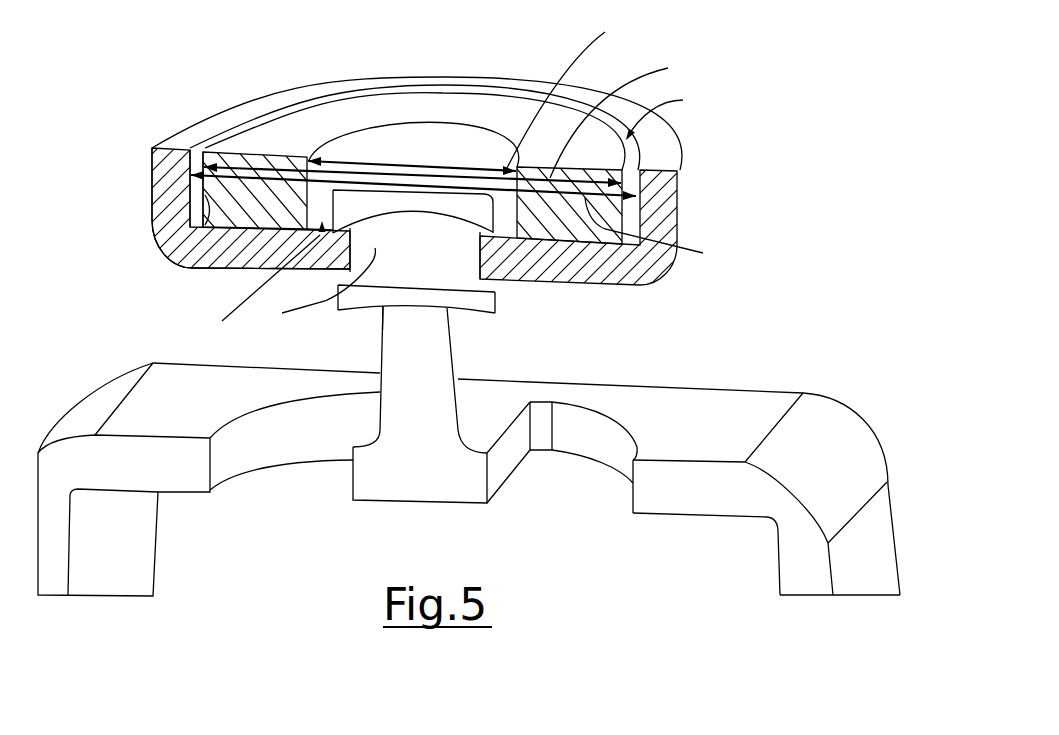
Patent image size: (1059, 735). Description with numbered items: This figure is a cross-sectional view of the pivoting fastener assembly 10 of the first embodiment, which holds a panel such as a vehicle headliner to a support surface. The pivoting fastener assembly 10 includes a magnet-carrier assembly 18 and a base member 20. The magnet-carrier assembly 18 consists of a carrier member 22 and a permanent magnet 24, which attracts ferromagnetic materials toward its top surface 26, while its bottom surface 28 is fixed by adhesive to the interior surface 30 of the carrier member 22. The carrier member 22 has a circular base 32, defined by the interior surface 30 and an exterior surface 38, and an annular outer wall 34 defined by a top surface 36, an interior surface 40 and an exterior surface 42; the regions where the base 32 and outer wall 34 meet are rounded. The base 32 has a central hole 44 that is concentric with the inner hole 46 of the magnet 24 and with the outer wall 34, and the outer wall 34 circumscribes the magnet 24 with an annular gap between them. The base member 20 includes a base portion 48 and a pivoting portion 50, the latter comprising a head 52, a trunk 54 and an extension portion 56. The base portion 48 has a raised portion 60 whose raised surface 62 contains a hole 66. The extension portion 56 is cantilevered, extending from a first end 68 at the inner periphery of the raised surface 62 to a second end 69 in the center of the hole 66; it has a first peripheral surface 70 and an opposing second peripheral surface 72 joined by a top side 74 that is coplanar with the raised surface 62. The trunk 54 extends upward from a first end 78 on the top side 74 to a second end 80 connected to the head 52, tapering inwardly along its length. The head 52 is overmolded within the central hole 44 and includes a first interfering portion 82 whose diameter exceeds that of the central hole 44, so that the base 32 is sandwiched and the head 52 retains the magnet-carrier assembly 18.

The pivoting fastener assembly 10 is at (802, 168).
The magnet-carrier assembly 18 is at (736, 137).
The base member 20 is at (810, 266).
The carrier member 22 is at (202, 121).
The magnet 24 is at (506, 106).
The top surface of the magnet 26 is at (453, 105).
The bottom surface of the magnet 28 is at (187, 264).
The interior surface of the carrier member 30 is at (200, 183).
The base 32 is at (185, 270).
The outer wall 34 is at (167, 187).
The top surface of the outer wall 36 is at (266, 98).
The exterior surface of the base 38 is at (235, 270).
The interior surface of the outer wall 40 is at (202, 150).
The exterior surface of the outer wall 42 is at (150, 218).
The central hole 44 is at (480, 278).
The inner hole of the magnet 46 is at (378, 143).
The base portion 48 is at (777, 392).
The pivoting portion 50 is at (641, 313).
The head 52 is at (496, 291).
The trunk 54 is at (450, 340).
The extension portion 56 is at (503, 417).
The raised portion 60 is at (736, 356).
The raised surface 62 is at (640, 393).
The hole 66 is at (565, 485).
The first end 68 is at (472, 390).
The second end 69 is at (438, 472).
The first peripheral surface 70 is at (330, 461).
The second peripheral surface 72 is at (500, 463).
The top side 74 is at (493, 398).
The first end of the trunk 78 is at (380, 392).
The second end of the trunk 80 is at (383, 310).
The first interfering portion 82 is at (338, 302).